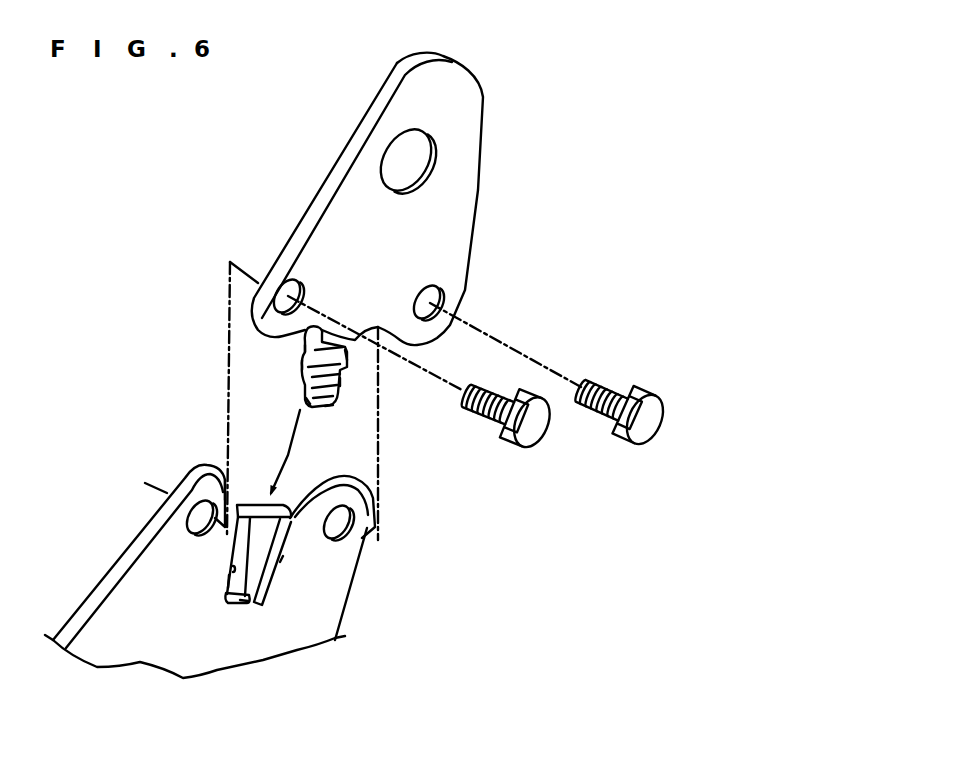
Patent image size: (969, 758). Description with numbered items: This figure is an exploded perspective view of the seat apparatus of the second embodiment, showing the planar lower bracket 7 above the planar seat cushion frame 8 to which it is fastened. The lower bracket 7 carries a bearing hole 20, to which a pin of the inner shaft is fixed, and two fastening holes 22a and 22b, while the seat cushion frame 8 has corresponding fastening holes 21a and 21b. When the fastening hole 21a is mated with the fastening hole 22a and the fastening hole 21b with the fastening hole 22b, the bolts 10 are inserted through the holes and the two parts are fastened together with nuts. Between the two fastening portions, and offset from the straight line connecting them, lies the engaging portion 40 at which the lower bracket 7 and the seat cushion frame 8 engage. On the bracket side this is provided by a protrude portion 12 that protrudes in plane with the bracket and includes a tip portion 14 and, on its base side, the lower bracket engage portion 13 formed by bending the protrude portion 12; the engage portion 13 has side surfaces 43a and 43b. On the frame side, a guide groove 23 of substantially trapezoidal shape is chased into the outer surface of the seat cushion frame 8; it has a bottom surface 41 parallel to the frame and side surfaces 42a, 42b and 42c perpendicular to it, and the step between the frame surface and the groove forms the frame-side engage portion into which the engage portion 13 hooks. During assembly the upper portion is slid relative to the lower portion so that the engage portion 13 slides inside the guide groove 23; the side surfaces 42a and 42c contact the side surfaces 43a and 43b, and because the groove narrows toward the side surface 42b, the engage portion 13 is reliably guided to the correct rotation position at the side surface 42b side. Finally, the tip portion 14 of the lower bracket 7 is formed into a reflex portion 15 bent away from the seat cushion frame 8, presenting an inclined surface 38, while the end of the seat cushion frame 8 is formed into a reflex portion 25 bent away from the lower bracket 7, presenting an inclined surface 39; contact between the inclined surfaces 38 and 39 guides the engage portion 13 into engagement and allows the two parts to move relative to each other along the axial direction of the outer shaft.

The lower bracket 7 is at (474, 164).
The seat cushion frame 8 is at (103, 600).
The bolts 10 is at (547, 450).
The protrude portion 12 is at (292, 365).
The lower bracket engage portion 13 is at (345, 345).
The tip portion 14 is at (341, 380).
The reflex portion 15 is at (336, 403).
The bearing hole 20 is at (420, 146).
The fastening hole 21a is at (215, 520).
The fastening hole 21b is at (327, 522).
The fastening hole 22a is at (300, 280).
The fastening hole 22b is at (443, 298).
The guide groove 23 is at (280, 552).
The reflex portion 25 is at (245, 487).
The inclined surface 38 is at (303, 398).
The inclined surface 39 is at (288, 500).
The engaging portion 40 is at (271, 606).
The bottom surface 41 is at (250, 536).
The side surface 42a is at (230, 575).
The side surface 42b is at (243, 603).
The side surface 42c is at (266, 572).
The side surface 43a is at (302, 352).
The side surface 43b is at (344, 353).